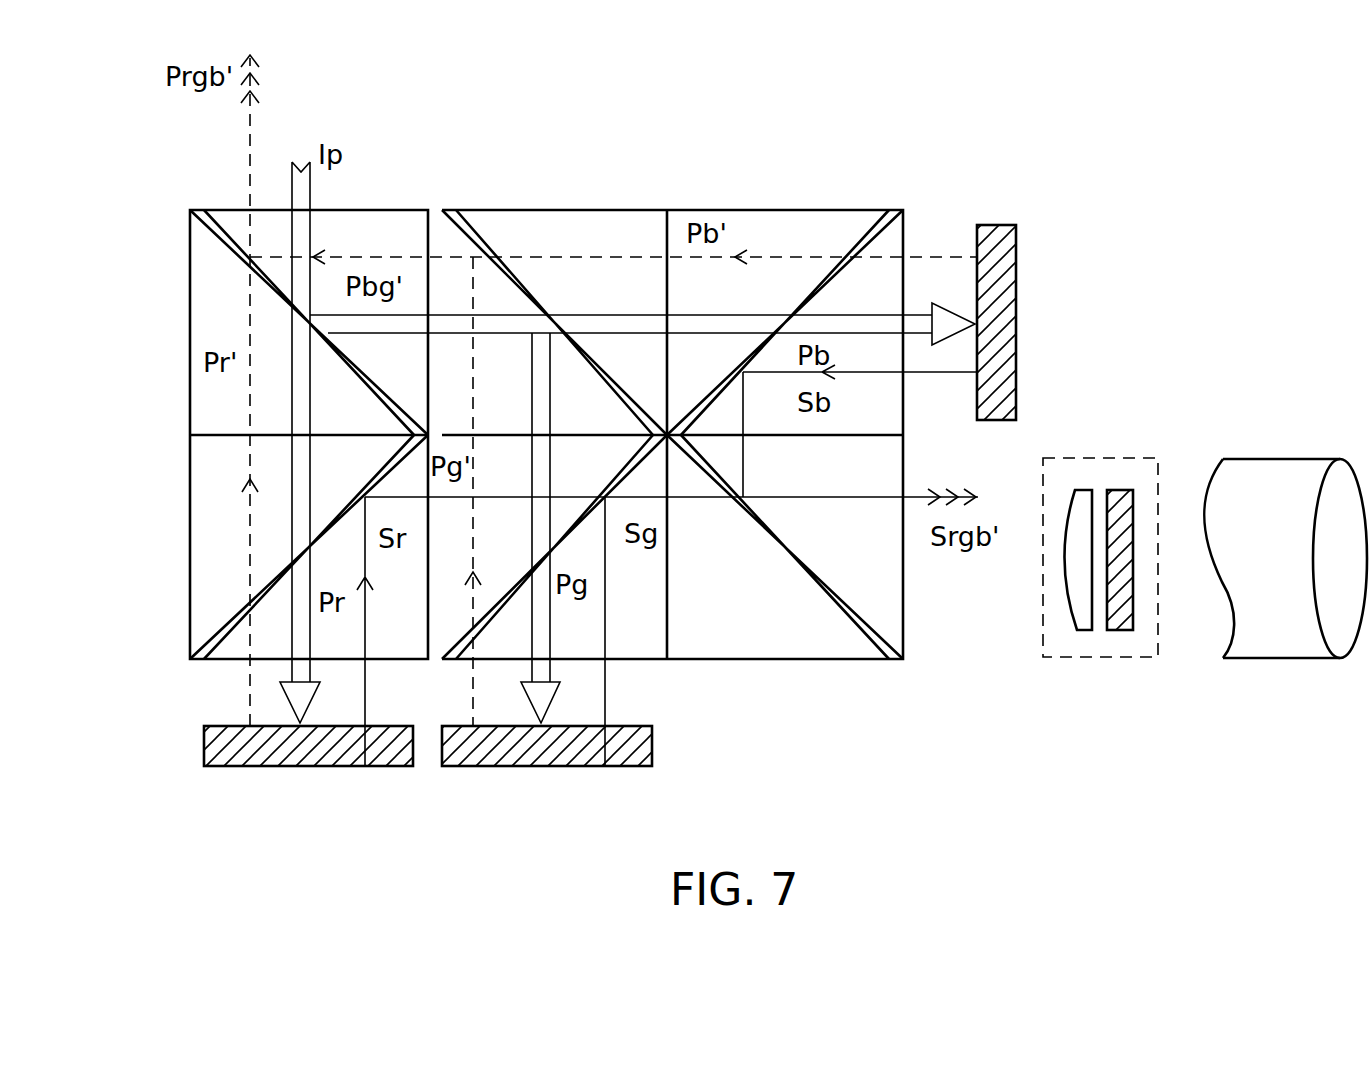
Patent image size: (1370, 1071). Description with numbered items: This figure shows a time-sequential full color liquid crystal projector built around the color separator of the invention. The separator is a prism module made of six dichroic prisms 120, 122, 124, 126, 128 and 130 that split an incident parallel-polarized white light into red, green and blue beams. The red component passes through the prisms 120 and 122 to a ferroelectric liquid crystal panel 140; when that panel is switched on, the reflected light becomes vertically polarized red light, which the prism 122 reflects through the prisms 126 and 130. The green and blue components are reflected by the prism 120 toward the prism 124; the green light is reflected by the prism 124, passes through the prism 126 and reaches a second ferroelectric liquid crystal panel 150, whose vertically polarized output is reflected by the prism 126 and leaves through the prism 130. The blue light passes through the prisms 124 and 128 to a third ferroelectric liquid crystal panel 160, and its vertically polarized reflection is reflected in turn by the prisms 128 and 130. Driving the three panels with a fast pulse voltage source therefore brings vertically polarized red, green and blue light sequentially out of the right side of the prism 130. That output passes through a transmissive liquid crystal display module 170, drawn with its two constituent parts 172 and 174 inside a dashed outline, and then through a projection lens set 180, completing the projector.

The dichroic prism 120 is at (358, 210).
The dichroic prism 122 is at (230, 662).
The dichroic prism 124 is at (547, 210).
The dichroic prism 126 is at (626, 662).
The dichroic prism 128 is at (753, 210).
The dichroic prism 130 is at (752, 662).
The ferroelectric liquid crystal panel 140 is at (210, 768).
The ferroelectric liquid crystal panel 150 is at (447, 768).
The ferroelectric liquid crystal panel 160 is at (1003, 225).
The transmissive liquid crystal display module 170 is at (1098, 458).
The lens 172 is at (1081, 632).
The polarizer 174 is at (1118, 632).
The projection lens set 180 is at (1270, 458).